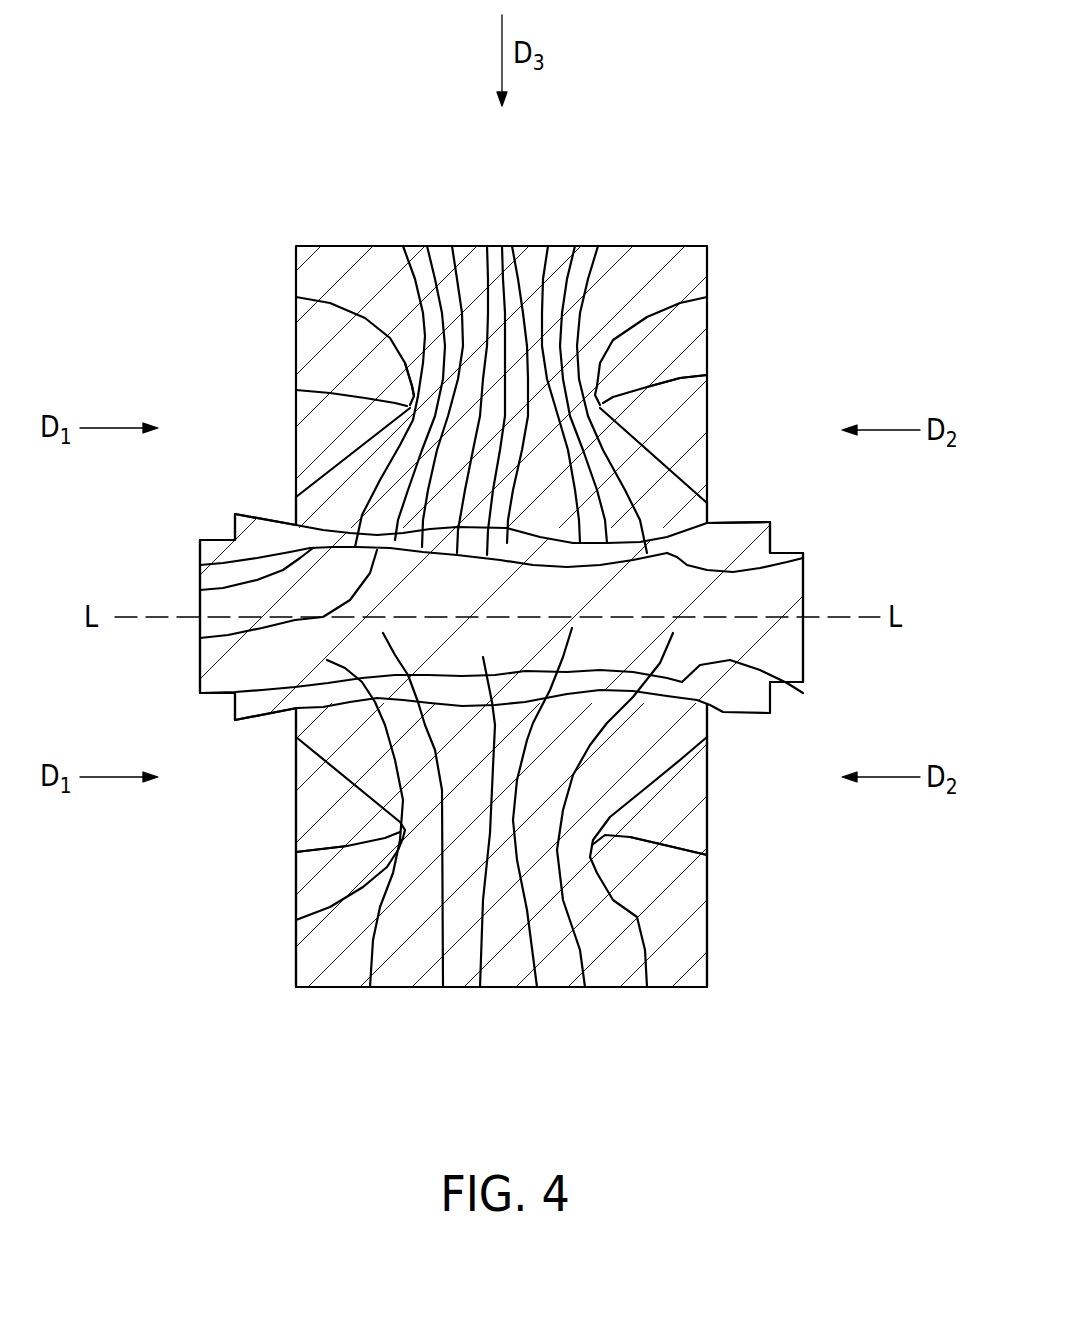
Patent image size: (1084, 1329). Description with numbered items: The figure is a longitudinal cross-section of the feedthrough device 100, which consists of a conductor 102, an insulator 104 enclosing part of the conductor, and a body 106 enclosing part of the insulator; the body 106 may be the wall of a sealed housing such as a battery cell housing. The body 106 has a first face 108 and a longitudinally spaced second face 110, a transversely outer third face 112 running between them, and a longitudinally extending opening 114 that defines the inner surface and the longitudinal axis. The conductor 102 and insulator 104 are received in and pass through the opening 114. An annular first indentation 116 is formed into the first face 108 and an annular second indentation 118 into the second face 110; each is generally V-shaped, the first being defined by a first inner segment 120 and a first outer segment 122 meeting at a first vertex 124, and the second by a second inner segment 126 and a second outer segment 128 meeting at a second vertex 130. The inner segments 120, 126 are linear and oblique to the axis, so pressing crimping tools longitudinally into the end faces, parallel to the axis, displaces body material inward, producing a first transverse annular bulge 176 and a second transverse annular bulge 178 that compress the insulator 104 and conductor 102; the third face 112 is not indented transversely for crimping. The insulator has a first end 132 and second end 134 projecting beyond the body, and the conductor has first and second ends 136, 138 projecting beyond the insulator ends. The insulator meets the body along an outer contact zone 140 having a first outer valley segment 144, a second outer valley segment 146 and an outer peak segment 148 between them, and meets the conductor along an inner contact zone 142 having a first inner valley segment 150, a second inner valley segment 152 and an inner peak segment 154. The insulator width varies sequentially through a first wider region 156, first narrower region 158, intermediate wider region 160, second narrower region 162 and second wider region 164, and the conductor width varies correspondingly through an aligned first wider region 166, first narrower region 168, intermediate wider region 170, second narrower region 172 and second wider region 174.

The feedthrough device 100 is at (266, 136).
The conductor 102 is at (202, 693).
The insulator 104 is at (248, 722).
The body 106 is at (296, 989).
The first face 108 is at (296, 968).
The second face 110 is at (707, 918).
The third face 112 is at (653, 246).
The opening 114 is at (293, 527).
The first indentation 116 is at (336, 421).
The second indentation 118 is at (674, 424).
The first inner segment 120 is at (330, 470).
The first outer segment 122 is at (309, 396).
The first vertex 124 is at (296, 297).
The second inner segment 126 is at (680, 470).
The second outer segment 128 is at (697, 391).
The second vertex 130 is at (707, 300).
The first end of insulator 132 is at (233, 527).
The second end of insulator 134 is at (770, 535).
The first end of conductor 136 is at (197, 670).
The second end of conductor 138 is at (803, 656).
The outer contact zone 140 is at (200, 565).
The inner contact zone 142 is at (200, 592).
The first outer valley segment 144 is at (427, 246).
The second outer valley segment 146 is at (575, 246).
The outer peak segment 148 is at (502, 246).
The first inner valley segment 150 is at (452, 246).
The second inner valley segment 152 is at (548, 246).
The inner peak segment 154 is at (487, 246).
The first wider region of insulator 156 is at (255, 527).
The first narrower region of insulator 158 is at (403, 246).
The intermediate wider region of insulator 160 is at (512, 246).
The second narrower region of insulator 162 is at (598, 246).
The second wider region of insulator 164 is at (735, 527).
The first wider region of conductor 166 is at (370, 987).
The first narrower region of conductor 168 is at (443, 987).
The intermediate wider region of conductor 170 is at (480, 987).
The second narrower region of conductor 172 is at (537, 987).
The second wider region of conductor 174 is at (585, 987).
The first transverse annular bulge 176 is at (200, 638).
The second transverse annular bulge 178 is at (803, 558).